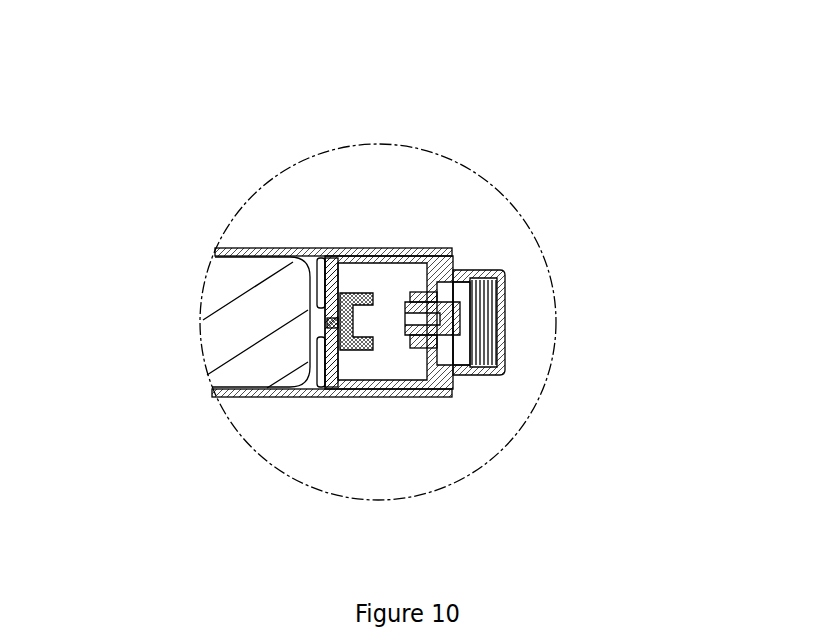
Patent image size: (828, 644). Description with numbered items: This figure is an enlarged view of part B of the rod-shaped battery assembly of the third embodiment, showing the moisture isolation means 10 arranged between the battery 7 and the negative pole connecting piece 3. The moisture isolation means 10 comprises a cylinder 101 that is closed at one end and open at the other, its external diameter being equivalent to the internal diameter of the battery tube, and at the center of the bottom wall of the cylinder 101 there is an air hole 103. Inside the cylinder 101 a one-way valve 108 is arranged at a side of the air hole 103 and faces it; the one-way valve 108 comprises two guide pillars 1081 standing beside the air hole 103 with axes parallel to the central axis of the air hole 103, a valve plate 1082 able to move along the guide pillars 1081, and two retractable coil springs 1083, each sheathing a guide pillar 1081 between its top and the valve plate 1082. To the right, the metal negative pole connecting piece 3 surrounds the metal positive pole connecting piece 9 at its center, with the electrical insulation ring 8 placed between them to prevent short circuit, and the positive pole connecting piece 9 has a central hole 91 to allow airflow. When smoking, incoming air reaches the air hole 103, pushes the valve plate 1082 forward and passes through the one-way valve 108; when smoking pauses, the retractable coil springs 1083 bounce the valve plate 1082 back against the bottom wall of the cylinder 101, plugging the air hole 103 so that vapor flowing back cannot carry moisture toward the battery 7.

The part B is at (365, 118).
The battery 7 is at (233, 292).
The moisture isolation means 10 is at (318, 290).
The cylinder 101 is at (328, 275).
The negative pole connecting piece 3 is at (447, 257).
The electrical insulation ring 8 is at (445, 297).
The positive pole connecting piece 9 is at (460, 346).
The central hole 91 is at (460, 322).
The air hole 103 is at (323, 328).
The one-way valve 108 is at (530, 420).
The guide pillar 1081 is at (377, 345).
The valve plate 1082 is at (350, 348).
The retractable coil spring 1083 is at (430, 340).